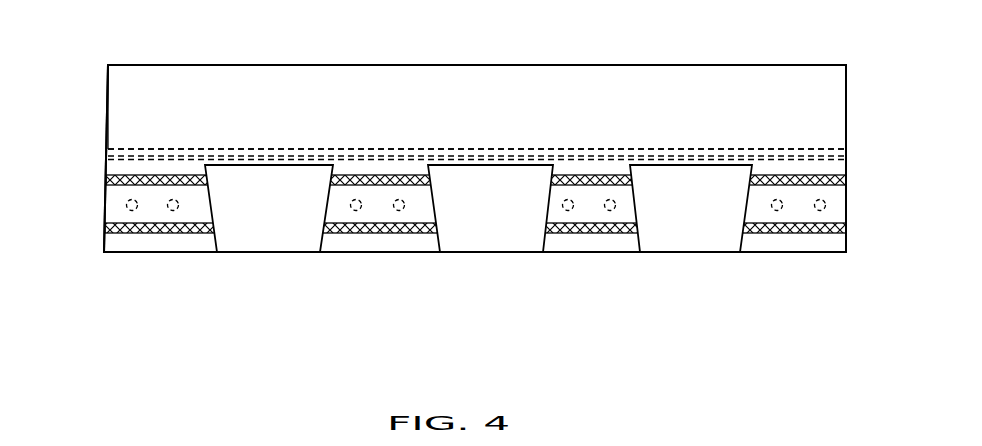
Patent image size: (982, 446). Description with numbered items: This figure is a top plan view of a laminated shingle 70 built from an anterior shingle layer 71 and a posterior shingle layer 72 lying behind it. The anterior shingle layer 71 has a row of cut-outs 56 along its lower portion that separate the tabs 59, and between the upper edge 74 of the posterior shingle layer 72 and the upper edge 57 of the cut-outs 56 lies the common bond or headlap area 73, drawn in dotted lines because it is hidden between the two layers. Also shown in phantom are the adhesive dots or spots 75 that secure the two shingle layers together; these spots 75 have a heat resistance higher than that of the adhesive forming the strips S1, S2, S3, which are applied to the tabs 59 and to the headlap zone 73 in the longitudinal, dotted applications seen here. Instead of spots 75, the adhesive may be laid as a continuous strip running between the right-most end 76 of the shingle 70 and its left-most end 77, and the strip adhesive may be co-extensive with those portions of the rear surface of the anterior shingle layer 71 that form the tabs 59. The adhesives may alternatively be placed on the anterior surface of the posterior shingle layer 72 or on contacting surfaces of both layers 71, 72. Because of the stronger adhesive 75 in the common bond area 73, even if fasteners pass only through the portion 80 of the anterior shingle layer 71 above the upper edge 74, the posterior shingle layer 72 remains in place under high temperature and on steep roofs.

The shingle 70 is at (682, 58).
The anterior shingle layer 71 is at (708, 85).
The posterior shingle layer 72 is at (698, 185).
The common bond area 73 is at (697, 150).
The upper edge of the posterior shingle layer 74 is at (600, 150).
The adhesive dots or spots 75 is at (356, 199).
The right-most end of the shingle 76 is at (848, 220).
The left-most end of the shingle 77 is at (108, 168).
The portion of the anterior shingle layer 80 is at (255, 104).
The cut-outs 56 is at (501, 210).
The upper edge of the cut-outs 57 is at (469, 166).
The tabs 59 is at (446, 240).
The adhesive strip S1 is at (130, 234).
The adhesive strip S2 is at (135, 185).
The adhesive strip S3 is at (133, 150).